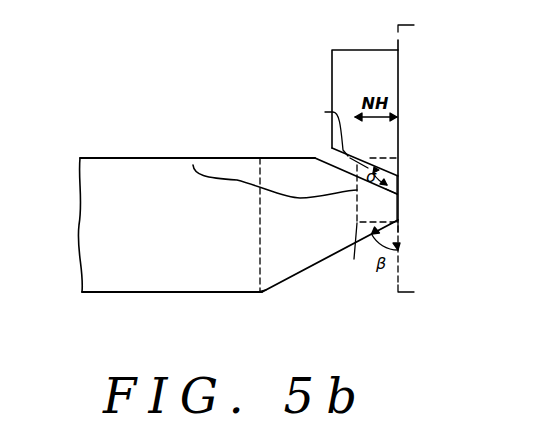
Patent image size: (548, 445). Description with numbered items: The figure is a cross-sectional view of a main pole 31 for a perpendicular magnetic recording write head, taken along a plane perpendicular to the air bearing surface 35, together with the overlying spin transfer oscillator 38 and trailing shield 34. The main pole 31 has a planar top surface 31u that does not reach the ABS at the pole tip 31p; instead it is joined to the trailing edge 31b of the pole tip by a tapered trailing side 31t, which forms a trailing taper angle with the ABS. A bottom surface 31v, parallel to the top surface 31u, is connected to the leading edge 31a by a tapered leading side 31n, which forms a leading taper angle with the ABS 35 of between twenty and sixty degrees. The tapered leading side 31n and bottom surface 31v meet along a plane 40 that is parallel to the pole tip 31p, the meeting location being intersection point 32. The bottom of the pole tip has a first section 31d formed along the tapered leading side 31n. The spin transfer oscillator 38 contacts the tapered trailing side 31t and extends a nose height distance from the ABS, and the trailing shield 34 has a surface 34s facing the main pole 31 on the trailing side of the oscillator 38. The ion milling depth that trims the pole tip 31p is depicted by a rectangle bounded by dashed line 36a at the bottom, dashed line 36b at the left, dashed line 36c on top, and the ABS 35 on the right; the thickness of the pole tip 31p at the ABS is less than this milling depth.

The main pole 31 is at (184, 278).
The planar top surface 31u is at (110, 158).
The bottom surface 31v is at (122, 292).
The tapered trailing side 31t is at (337, 168).
The tapered leading side 31n is at (307, 270).
The pole tip 31p is at (398, 203).
The leading edge 31a is at (398, 221).
The trailing edge 31b is at (398, 191).
The tapered section 31d is at (388, 236).
The intersection point 32 is at (263, 292).
The trailing shield 34 is at (387, 72).
The surface 34s is at (398, 172).
The ABS 35 is at (419, 158).
The dashed line 36a is at (355, 253).
The dashed line 36b is at (193, 165).
The dashed line 36c is at (384, 170).
The spin transfer oscillator 38 is at (325, 127).
The plane 40 is at (255, 227).